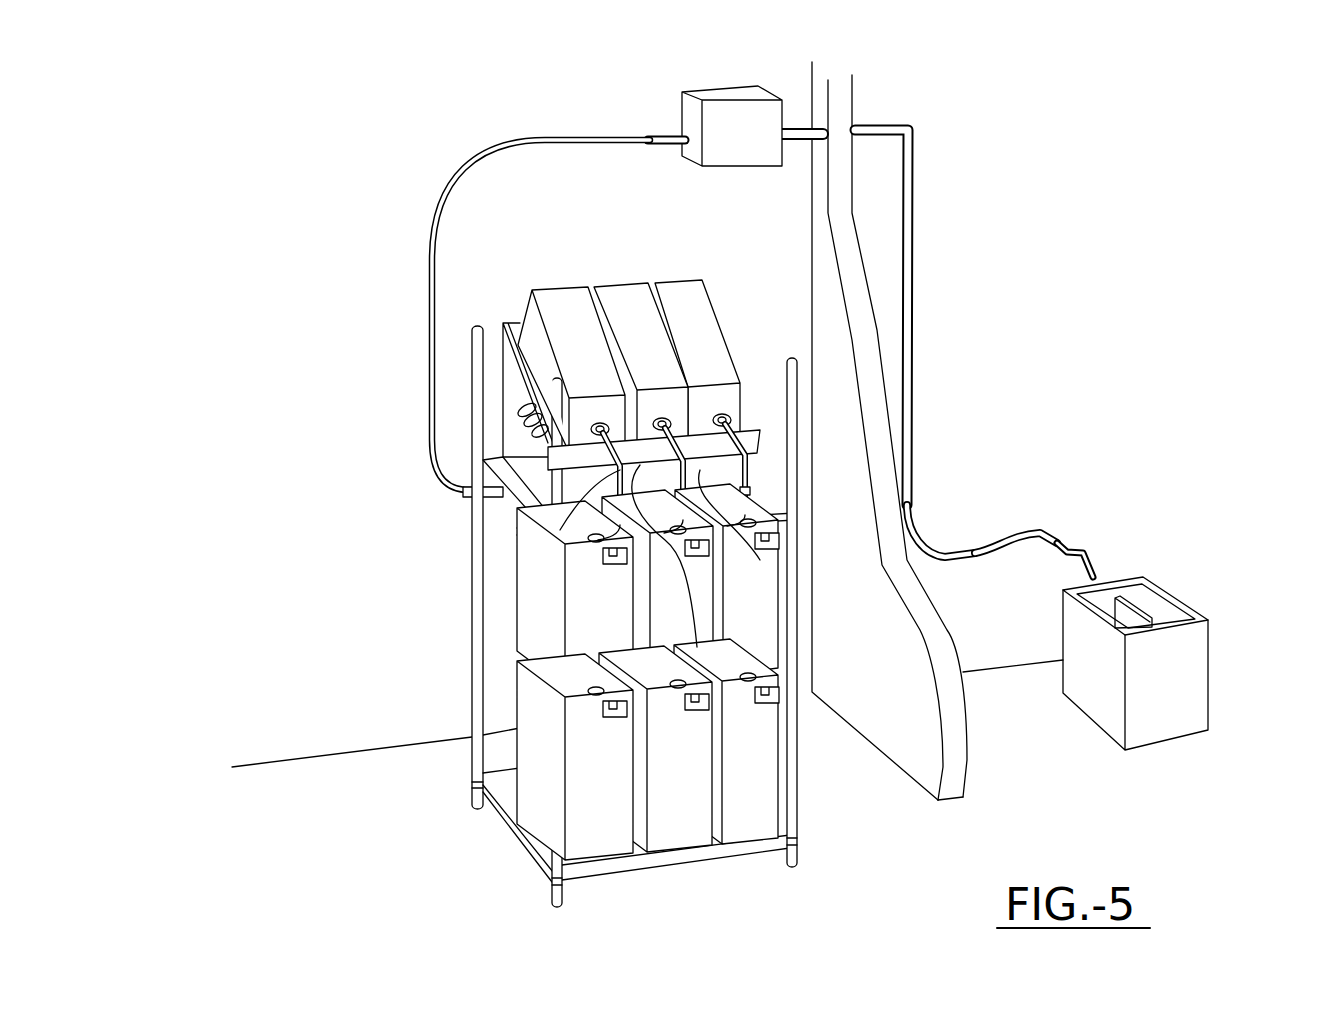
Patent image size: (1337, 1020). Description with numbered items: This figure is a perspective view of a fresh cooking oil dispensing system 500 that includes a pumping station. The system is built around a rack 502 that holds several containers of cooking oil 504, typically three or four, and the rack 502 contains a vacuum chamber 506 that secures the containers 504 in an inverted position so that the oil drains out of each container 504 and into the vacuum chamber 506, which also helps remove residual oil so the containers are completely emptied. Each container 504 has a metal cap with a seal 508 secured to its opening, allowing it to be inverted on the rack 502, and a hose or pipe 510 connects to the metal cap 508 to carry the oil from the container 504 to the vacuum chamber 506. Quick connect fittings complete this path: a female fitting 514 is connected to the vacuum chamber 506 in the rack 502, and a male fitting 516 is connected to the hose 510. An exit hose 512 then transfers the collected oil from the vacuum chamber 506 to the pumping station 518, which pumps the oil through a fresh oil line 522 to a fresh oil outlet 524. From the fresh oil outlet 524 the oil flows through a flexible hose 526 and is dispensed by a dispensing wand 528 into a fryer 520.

The dispensing system 500 is at (1140, 283).
The rack 502 is at (580, 483).
The container of cooking oil 504 is at (550, 303).
The vacuum chamber 506 is at (543, 440).
The metal cap with a seal 508 is at (598, 420).
The hose or pipe 510 is at (620, 507).
The exit hose 512 is at (437, 458).
The female fitting 514 is at (618, 548).
The male fitting 516 is at (620, 520).
The pumping station 518 is at (765, 150).
The fryer 520 is at (1145, 598).
The fresh oil line 522 is at (877, 123).
The fresh oil outlet 524 is at (913, 507).
The flexible hose 526 is at (973, 553).
The dispensing wand 528 is at (1083, 553).